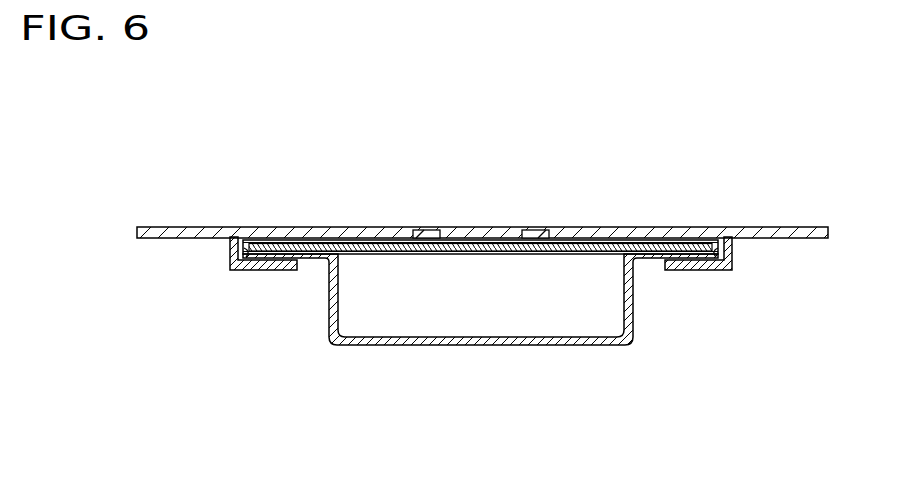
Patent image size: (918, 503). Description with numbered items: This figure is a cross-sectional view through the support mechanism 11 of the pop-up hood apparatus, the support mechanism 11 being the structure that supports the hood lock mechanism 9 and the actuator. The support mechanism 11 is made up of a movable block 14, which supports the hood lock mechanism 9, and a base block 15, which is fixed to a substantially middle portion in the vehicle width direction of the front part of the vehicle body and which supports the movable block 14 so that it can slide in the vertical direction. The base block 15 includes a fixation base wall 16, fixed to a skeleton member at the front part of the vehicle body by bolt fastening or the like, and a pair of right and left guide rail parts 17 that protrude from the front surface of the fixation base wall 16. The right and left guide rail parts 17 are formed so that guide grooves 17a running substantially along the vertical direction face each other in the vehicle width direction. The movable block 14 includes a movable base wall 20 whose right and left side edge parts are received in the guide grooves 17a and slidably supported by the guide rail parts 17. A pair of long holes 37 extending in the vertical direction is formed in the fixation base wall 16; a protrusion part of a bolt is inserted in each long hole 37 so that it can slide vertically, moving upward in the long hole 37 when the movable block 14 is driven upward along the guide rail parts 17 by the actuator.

The hood lock mechanism 9 is at (565, 350).
The support mechanism 11 is at (477, 289).
The movable block 14 is at (477, 242).
The base block 15 is at (152, 226).
The fixation base wall 16 is at (352, 227).
The guide rail part 17 is at (258, 271).
The guide groove 17a is at (247, 253).
The movable base wall 20 is at (480, 194).
The long hole 37 is at (428, 227).